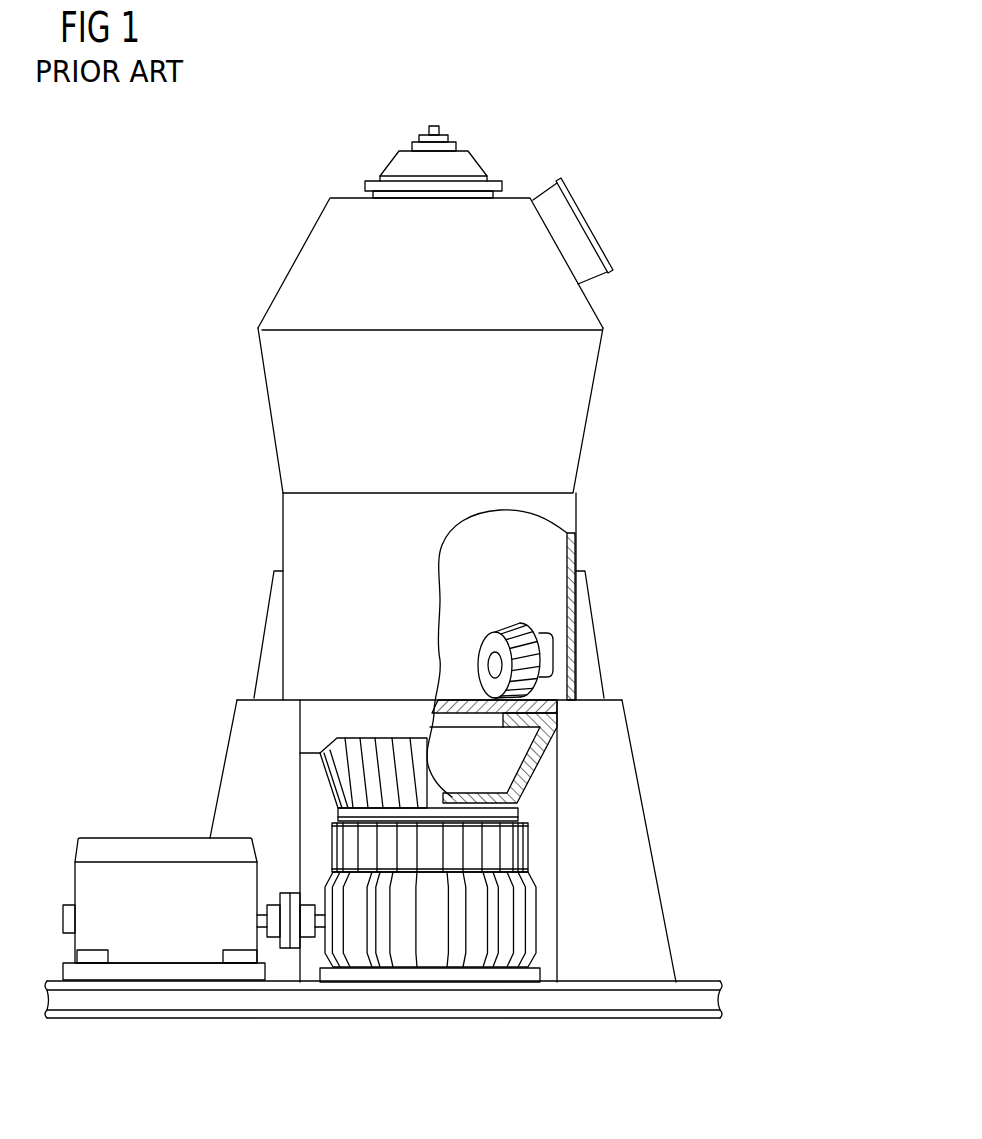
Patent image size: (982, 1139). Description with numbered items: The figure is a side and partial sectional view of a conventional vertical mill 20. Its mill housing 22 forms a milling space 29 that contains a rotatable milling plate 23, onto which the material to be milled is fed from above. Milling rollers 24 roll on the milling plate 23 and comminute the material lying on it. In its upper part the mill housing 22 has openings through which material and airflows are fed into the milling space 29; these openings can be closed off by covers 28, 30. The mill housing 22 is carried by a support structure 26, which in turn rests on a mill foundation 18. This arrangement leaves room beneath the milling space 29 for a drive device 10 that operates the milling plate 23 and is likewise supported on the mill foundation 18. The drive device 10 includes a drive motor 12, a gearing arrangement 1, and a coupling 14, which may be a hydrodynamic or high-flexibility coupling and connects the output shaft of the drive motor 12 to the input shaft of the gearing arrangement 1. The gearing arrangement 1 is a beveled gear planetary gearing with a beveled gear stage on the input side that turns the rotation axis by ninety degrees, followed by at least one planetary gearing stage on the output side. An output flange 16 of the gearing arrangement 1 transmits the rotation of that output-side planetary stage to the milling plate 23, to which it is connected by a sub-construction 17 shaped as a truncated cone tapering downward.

The gearing arrangement 1 is at (428, 953).
The drive device 10 is at (682, 924).
The drive motor 12 is at (110, 898).
The coupling 14 is at (283, 942).
The output flange 16 is at (522, 808).
The sub-construction 17 is at (545, 760).
The mill foundation 18 is at (622, 1000).
The vertical mill 20 is at (222, 391).
The mill housing 22 is at (571, 408).
The milling plate 23 is at (557, 706).
The milling roller 24 is at (507, 628).
The support structure 26 is at (237, 782).
The cover 28 is at (466, 166).
The milling space 29 is at (531, 541).
The cover 30 is at (571, 228).